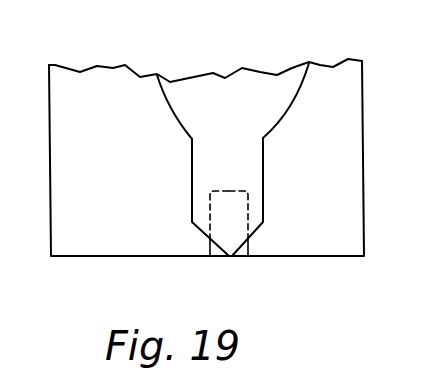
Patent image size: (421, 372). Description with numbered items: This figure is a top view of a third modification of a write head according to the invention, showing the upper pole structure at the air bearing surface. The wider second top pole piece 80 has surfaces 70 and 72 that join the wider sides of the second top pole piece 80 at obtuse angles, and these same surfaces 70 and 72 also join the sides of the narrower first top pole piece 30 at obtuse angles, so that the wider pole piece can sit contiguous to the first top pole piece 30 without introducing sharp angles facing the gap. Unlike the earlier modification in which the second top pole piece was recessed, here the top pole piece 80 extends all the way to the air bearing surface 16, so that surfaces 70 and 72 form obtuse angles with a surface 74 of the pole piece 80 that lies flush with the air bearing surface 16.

The air bearing surface 16 is at (91, 257).
The first top pole piece 30 is at (205, 257).
The surface 70 is at (204, 236).
The surface 72 is at (257, 226).
The surface 74 is at (233, 257).
The second top pole piece 80 is at (305, 85).